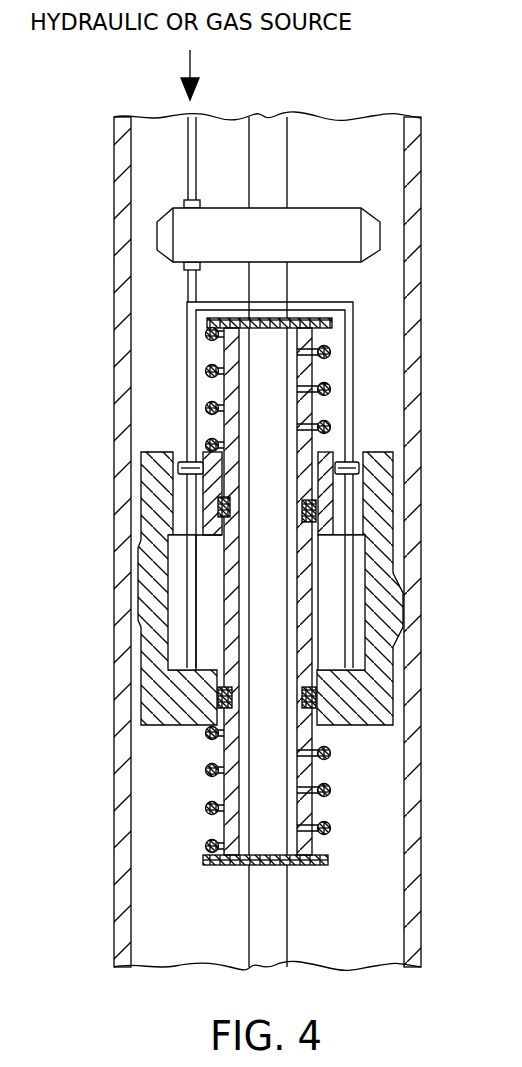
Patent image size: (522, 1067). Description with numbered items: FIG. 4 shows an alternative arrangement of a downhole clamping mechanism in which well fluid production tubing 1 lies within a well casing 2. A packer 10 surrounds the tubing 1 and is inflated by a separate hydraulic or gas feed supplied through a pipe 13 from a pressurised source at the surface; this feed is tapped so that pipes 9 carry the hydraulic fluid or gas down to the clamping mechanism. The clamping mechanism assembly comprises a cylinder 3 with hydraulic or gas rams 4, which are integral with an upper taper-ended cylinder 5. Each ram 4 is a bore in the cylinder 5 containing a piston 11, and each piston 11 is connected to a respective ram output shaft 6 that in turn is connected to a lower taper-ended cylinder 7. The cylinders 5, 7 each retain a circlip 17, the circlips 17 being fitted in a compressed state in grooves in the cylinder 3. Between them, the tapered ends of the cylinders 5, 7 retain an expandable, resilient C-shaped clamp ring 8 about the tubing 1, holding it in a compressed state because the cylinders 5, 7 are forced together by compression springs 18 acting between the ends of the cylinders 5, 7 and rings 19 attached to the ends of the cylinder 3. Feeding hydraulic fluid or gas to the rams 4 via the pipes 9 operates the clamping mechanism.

The well fluid production tubing 1 is at (278, 158).
The well casing 2 is at (428, 180).
The cylinder 3 is at (312, 598).
The hydraulic or gas ram 4 is at (184, 500).
The upper taper-ended cylinder 5 is at (141, 523).
The ram output shaft 6 is at (168, 592).
The lower taper-ended cylinder 7 is at (150, 700).
The C-shaped clamp ring 8 is at (150, 607).
The pipe 9 is at (187, 400).
The packer 10 is at (157, 237).
The piston 11 is at (172, 473).
The pipe 13 is at (187, 181).
The circlip 17 is at (318, 510).
The compression spring 18 is at (351, 372).
The ring 19 is at (347, 305).